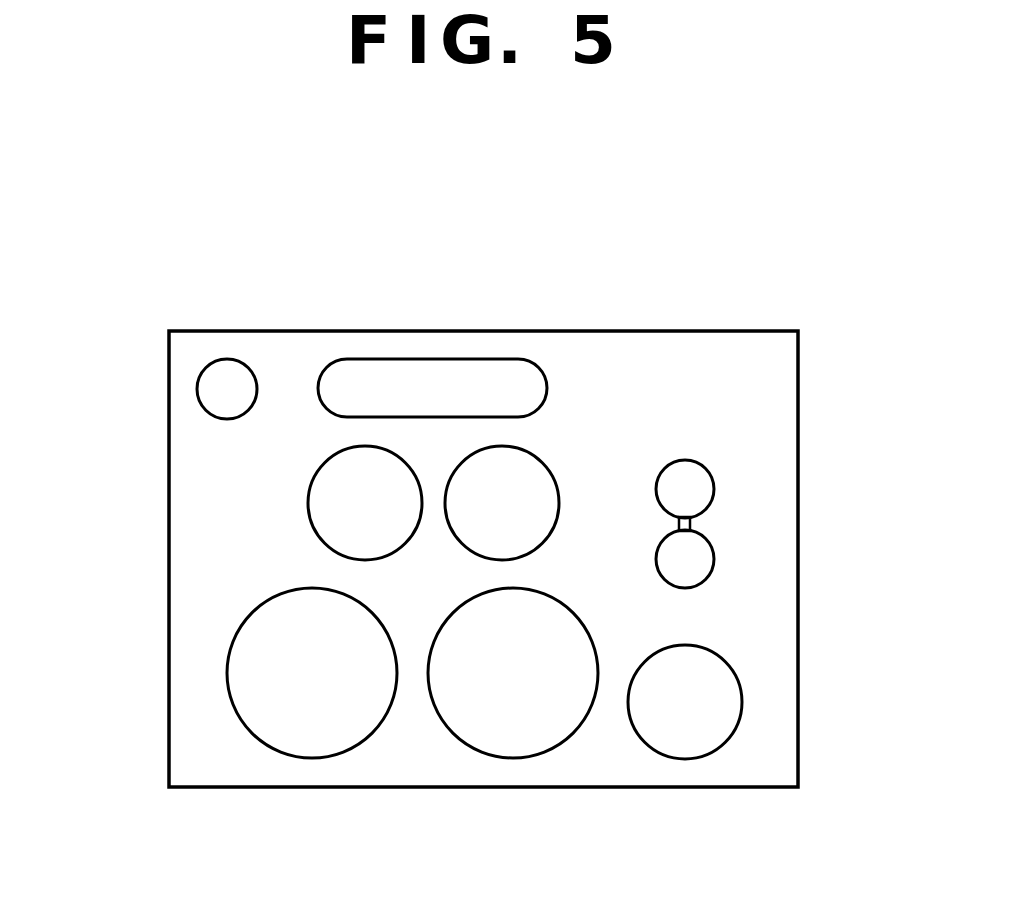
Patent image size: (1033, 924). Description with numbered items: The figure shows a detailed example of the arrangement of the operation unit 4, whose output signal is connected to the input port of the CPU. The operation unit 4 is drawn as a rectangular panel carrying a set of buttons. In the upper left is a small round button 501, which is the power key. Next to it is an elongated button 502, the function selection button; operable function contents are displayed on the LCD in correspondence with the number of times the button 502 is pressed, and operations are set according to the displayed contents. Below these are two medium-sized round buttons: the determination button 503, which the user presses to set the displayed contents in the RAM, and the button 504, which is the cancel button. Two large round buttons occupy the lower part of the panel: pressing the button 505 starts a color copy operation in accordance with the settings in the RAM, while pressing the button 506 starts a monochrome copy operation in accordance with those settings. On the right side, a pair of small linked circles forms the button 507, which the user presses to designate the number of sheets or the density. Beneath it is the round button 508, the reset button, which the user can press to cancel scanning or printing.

The operation unit 4 is at (428, 789).
The button 501 is at (227, 388).
The button 502 is at (432, 390).
The determination button 503 is at (503, 502).
The button 504 is at (363, 500).
The button 505 is at (307, 718).
The button 506 is at (532, 717).
The button 507 is at (685, 559).
The button 508 is at (685, 702).